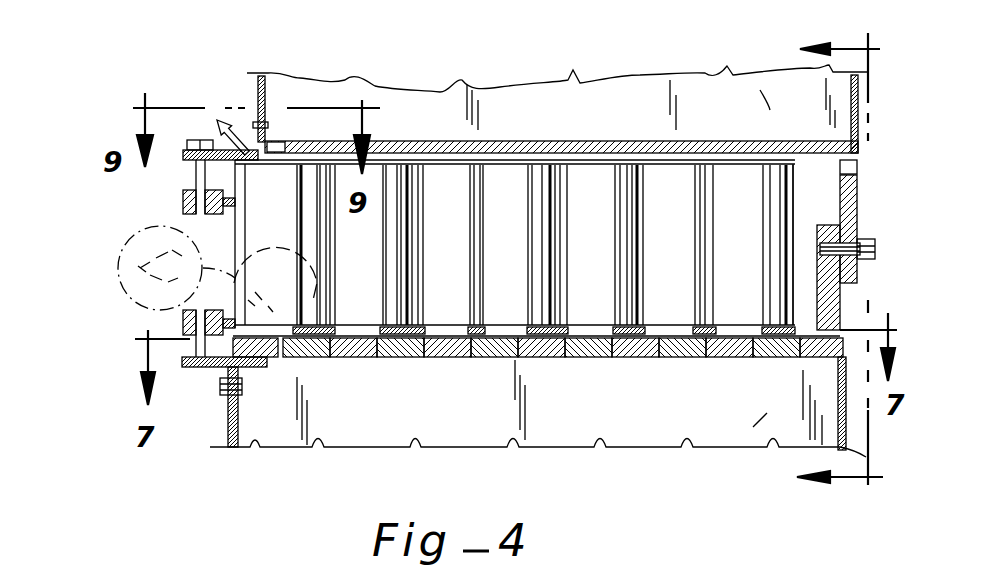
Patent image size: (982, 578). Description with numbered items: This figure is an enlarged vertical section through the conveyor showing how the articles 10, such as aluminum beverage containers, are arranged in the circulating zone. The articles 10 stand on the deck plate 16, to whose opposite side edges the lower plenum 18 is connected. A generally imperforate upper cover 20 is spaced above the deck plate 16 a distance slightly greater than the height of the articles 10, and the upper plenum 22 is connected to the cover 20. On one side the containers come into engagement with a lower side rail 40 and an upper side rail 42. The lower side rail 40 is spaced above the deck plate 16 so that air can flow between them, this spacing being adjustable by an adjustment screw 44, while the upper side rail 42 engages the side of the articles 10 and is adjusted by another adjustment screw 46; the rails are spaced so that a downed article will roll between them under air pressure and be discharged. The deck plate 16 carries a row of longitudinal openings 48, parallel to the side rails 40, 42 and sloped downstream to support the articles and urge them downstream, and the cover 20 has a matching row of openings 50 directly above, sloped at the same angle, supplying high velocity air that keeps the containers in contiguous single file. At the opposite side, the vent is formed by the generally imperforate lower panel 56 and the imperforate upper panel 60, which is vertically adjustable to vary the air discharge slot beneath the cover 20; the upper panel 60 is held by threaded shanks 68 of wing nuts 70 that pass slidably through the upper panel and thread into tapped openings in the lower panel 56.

The articles 10 is at (118, 263).
The deck plate 16 is at (615, 357).
The lower plenum 18 is at (753, 427).
The upper cover 20 is at (543, 138).
The upper plenum 22 is at (760, 90).
The lower side rail 40 is at (183, 323).
The upper side rail 42 is at (183, 202).
The adjustment screw 44 is at (205, 368).
The adjustment screw 46 is at (207, 157).
The longitudinal openings 48 is at (278, 357).
The openings 50 is at (282, 142).
The lower panel 56 is at (830, 303).
The upper panel 60 is at (857, 176).
The threaded shanks 68 is at (864, 248).
The wing nuts 70 is at (858, 232).